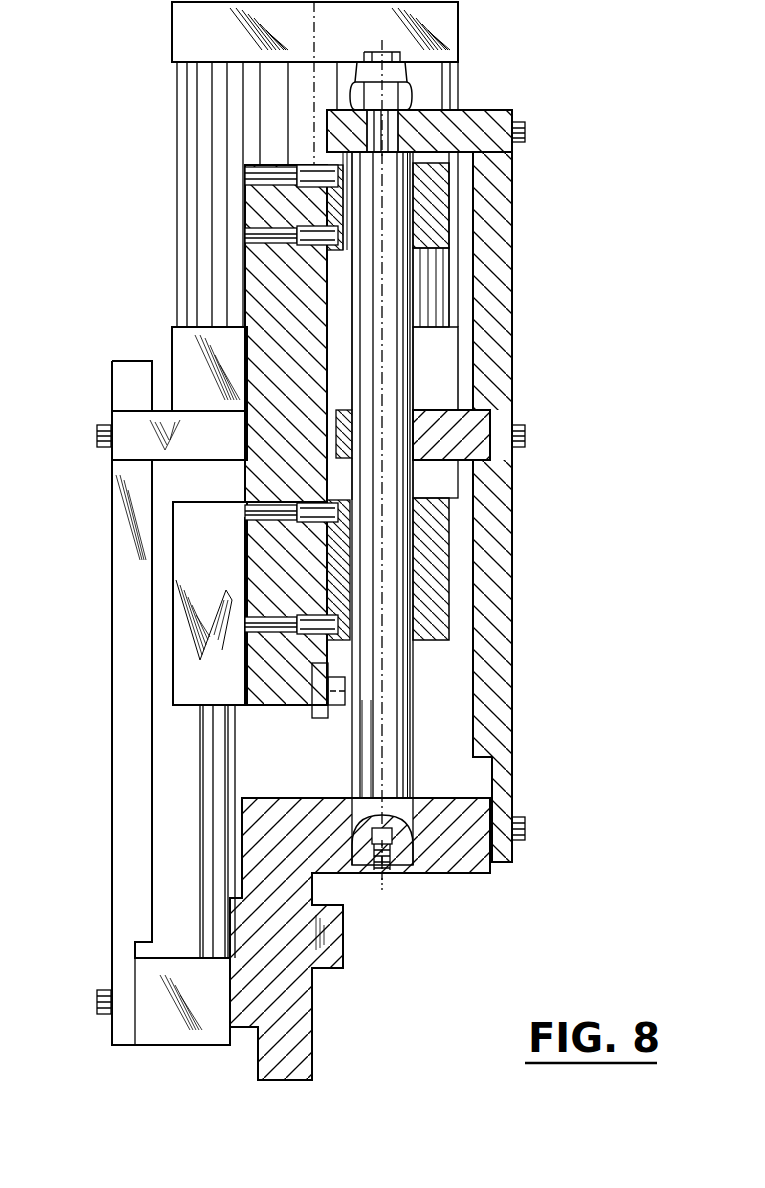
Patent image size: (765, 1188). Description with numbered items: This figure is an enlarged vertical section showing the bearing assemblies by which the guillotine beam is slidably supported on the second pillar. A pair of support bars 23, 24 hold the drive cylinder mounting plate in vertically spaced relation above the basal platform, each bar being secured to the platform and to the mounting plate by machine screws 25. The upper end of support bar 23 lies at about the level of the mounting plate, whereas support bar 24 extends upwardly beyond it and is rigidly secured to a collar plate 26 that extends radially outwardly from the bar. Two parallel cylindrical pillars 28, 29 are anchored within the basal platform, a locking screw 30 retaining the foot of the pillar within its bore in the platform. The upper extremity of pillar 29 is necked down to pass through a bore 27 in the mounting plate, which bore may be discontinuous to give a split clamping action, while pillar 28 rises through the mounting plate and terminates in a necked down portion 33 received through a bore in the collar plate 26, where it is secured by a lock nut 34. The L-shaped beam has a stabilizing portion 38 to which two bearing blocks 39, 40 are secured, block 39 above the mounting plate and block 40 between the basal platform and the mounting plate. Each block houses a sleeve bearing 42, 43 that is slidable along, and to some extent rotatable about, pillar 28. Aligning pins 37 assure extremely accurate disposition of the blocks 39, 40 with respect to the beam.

The support bar 23 is at (124, 731).
The support bar 24 is at (503, 352).
The machine screws 25 is at (97, 437).
The collar plate 26 is at (467, 135).
The bore 27 is at (410, 430).
The pillar 28 is at (395, 768).
The pillar 29 is at (222, 813).
The locking screw 30 is at (390, 868).
The necked down portion 33 is at (395, 135).
The lock nut 34 is at (412, 97).
The aligning pins 37 is at (313, 240).
The stabilizing portion 38 is at (260, 483).
The bearing block 39 is at (443, 215).
The bearing block 40 is at (437, 562).
The sleeve bearing 42 is at (437, 270).
The sleeve bearing 43 is at (418, 497).